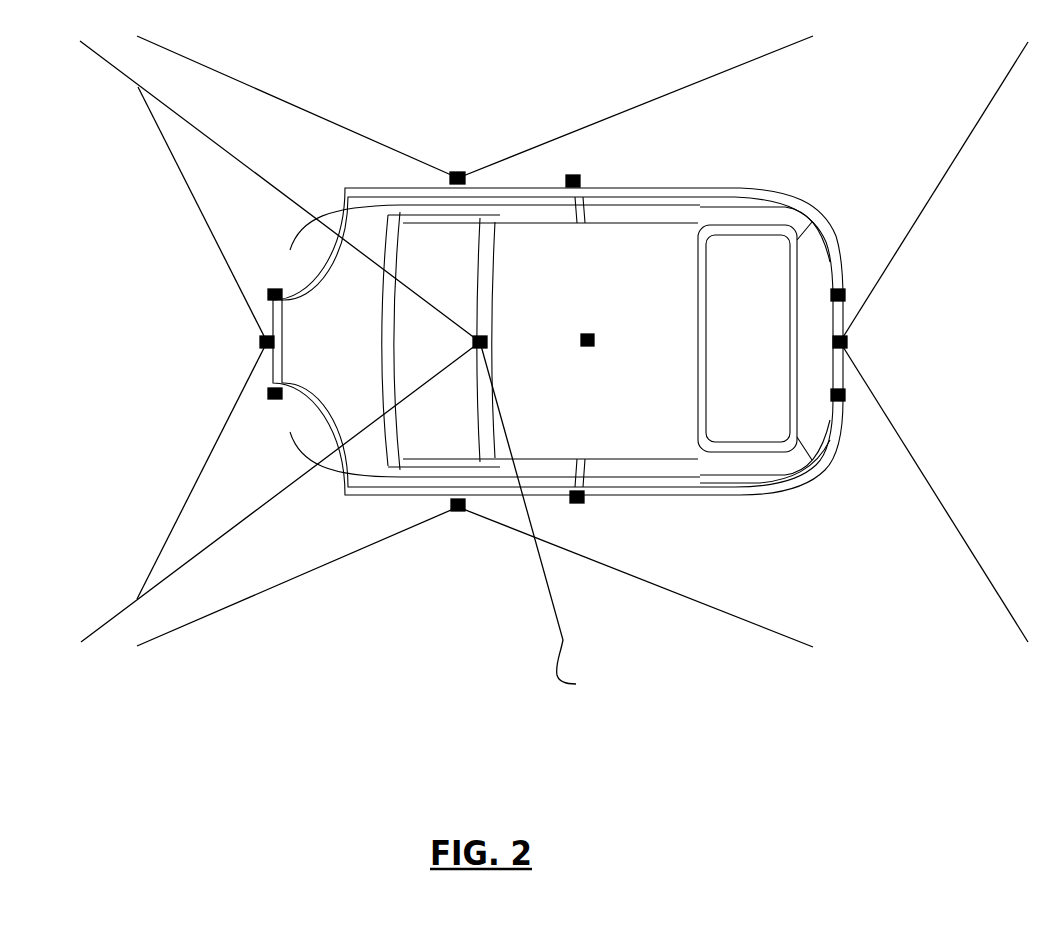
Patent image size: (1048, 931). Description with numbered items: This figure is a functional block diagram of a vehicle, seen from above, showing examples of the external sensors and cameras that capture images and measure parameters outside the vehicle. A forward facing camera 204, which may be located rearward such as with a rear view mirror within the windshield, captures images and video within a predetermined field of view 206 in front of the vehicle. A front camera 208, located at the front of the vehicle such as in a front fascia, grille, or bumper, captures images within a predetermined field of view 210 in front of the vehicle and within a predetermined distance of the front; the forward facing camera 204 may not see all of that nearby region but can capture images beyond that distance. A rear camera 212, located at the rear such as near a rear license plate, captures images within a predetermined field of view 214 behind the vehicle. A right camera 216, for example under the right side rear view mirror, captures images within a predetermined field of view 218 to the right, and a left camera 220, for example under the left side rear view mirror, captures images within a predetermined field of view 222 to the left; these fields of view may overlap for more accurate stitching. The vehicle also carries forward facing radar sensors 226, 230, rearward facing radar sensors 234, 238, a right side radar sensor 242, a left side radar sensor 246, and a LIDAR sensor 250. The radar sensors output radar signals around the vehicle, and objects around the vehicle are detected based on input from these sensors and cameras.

The forward facing camera 204 is at (563, 640).
The predetermined field of view 206 is at (257, 170).
The front camera 208 is at (262, 341).
The predetermined field of view 210 is at (183, 176).
The rear camera 212 is at (846, 340).
The predetermined field of view 214 is at (942, 180).
The right camera 216 is at (458, 172).
The predetermined field of view 218 is at (223, 73).
The left camera 220 is at (462, 511).
The predetermined field of view 222 is at (583, 553).
The forward facing radar sensor 226 is at (268, 293).
The forward facing radar sensor 230 is at (268, 393).
The rearward facing radar sensor 234 is at (845, 295).
The rearward facing radar sensor 238 is at (845, 395).
The right side radar sensor 242 is at (577, 176).
The left side radar sensor 246 is at (580, 503).
The light detection and ranging (LIDAR) sensor 250 is at (587, 340).